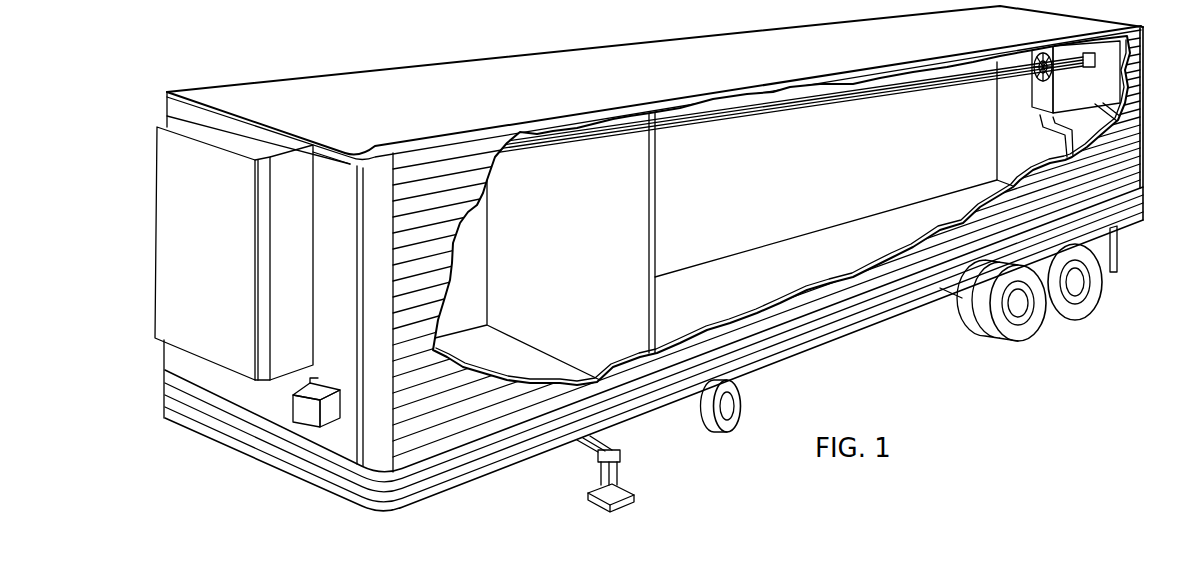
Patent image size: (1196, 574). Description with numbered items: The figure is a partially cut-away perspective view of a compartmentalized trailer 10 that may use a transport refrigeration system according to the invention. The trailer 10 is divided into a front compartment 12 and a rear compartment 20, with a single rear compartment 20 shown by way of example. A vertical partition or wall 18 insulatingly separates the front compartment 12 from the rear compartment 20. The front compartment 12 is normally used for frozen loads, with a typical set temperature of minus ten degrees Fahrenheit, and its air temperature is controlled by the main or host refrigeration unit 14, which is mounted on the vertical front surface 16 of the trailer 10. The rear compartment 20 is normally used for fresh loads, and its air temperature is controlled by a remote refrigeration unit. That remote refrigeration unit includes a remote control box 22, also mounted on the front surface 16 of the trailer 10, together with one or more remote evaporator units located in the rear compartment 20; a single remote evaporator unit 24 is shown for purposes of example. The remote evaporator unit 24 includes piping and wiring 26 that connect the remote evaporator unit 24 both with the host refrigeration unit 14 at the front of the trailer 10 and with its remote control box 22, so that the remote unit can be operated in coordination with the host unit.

The compartmentalized trailer 10 is at (527, 513).
The front compartment 12 is at (580, 332).
The host refrigeration unit 14 is at (157, 150).
The vertical front surface 16 is at (337, 167).
The vertical partition 18 is at (635, 163).
The rear compartment 20 is at (808, 202).
The remote control box 22 is at (333, 427).
The remote evaporator unit 24 is at (1141, 84).
The piping and wiring 26 is at (1012, 80).